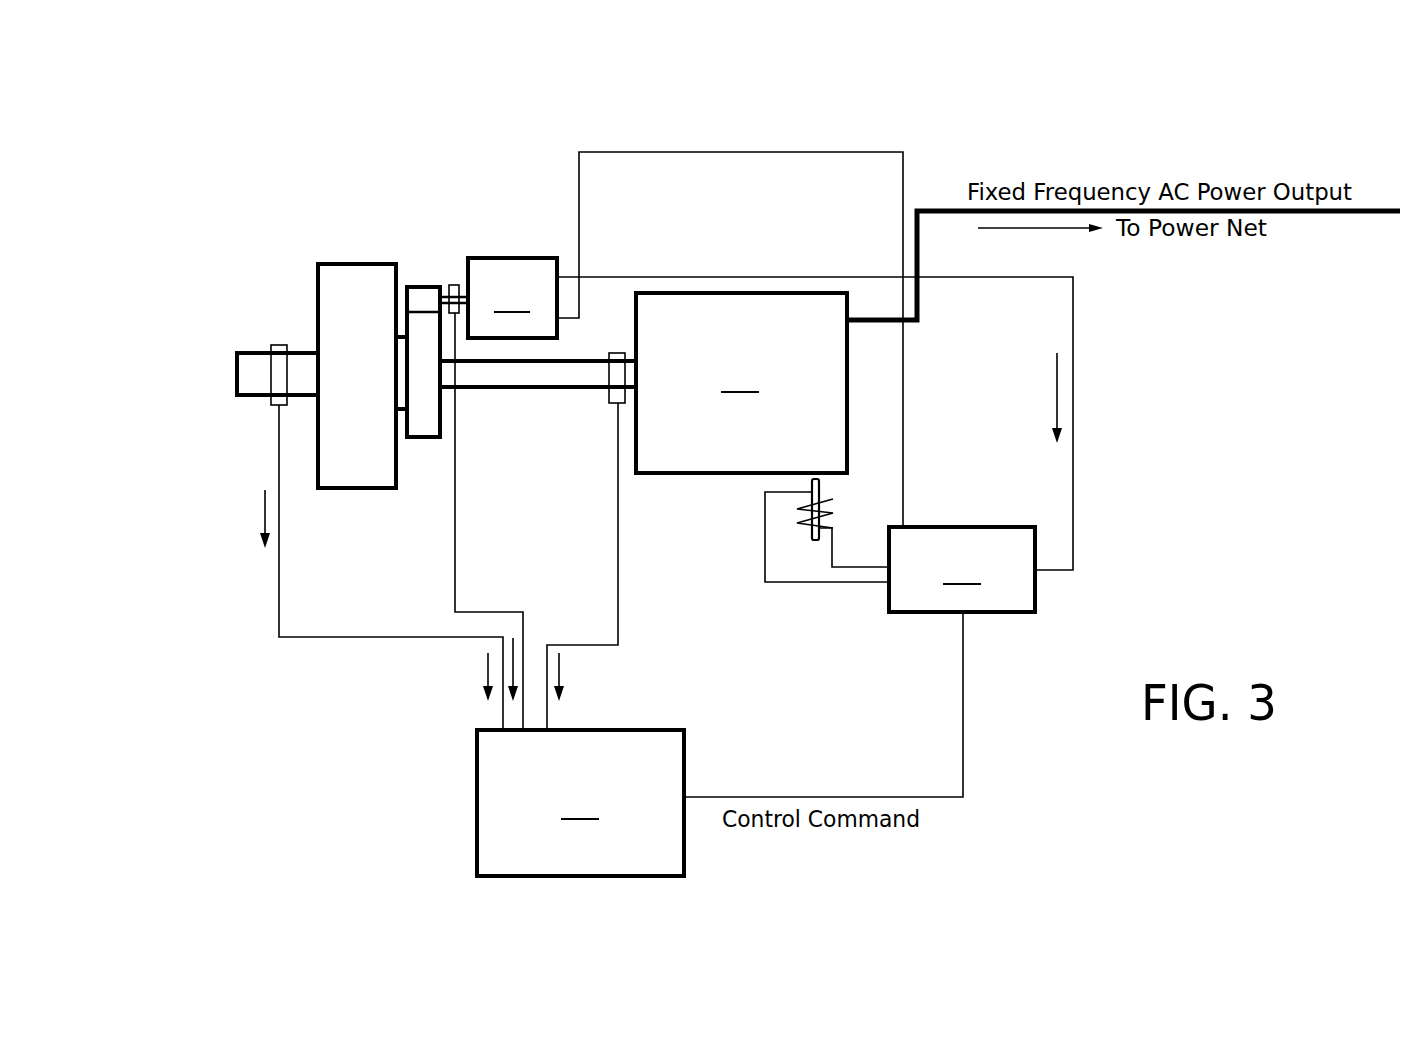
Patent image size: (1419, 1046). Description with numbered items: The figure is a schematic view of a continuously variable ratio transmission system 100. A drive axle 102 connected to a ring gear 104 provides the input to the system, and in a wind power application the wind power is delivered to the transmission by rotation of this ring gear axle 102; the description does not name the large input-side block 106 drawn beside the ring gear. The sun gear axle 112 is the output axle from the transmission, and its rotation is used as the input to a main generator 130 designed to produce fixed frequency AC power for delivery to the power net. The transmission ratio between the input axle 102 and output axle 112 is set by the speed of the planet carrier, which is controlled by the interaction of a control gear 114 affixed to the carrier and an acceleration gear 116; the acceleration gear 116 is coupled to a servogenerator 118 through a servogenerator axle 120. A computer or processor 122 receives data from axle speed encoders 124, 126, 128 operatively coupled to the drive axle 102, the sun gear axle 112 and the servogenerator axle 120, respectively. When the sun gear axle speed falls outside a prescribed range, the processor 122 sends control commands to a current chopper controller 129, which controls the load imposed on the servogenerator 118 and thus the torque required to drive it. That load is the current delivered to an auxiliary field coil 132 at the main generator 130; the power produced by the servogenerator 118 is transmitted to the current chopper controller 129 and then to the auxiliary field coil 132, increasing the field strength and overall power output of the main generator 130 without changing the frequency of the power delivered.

The continuously variable ratio transmission system 100 is at (737, 108).
The drive axle 102 is at (240, 376).
The ring gear 104 is at (335, 465).
The engine 106 is at (359, 272).
The sun gear axle 112 is at (523, 395).
The control gear 114 is at (420, 437).
The acceleration gear 116 is at (417, 287).
The servogenerator 118 is at (770, 414).
The servogenerator axle 120 is at (447, 282).
The computer or processor 122 is at (580, 803).
The axle speed encoder 124 is at (279, 595).
The axle speed encoder 126 is at (620, 600).
The axle speed encoder 128 is at (456, 562).
The current chopper controller 129 is at (859, 662).
The main generator 130 is at (1018, 342).
The auxiliary field coil 132 is at (814, 542).